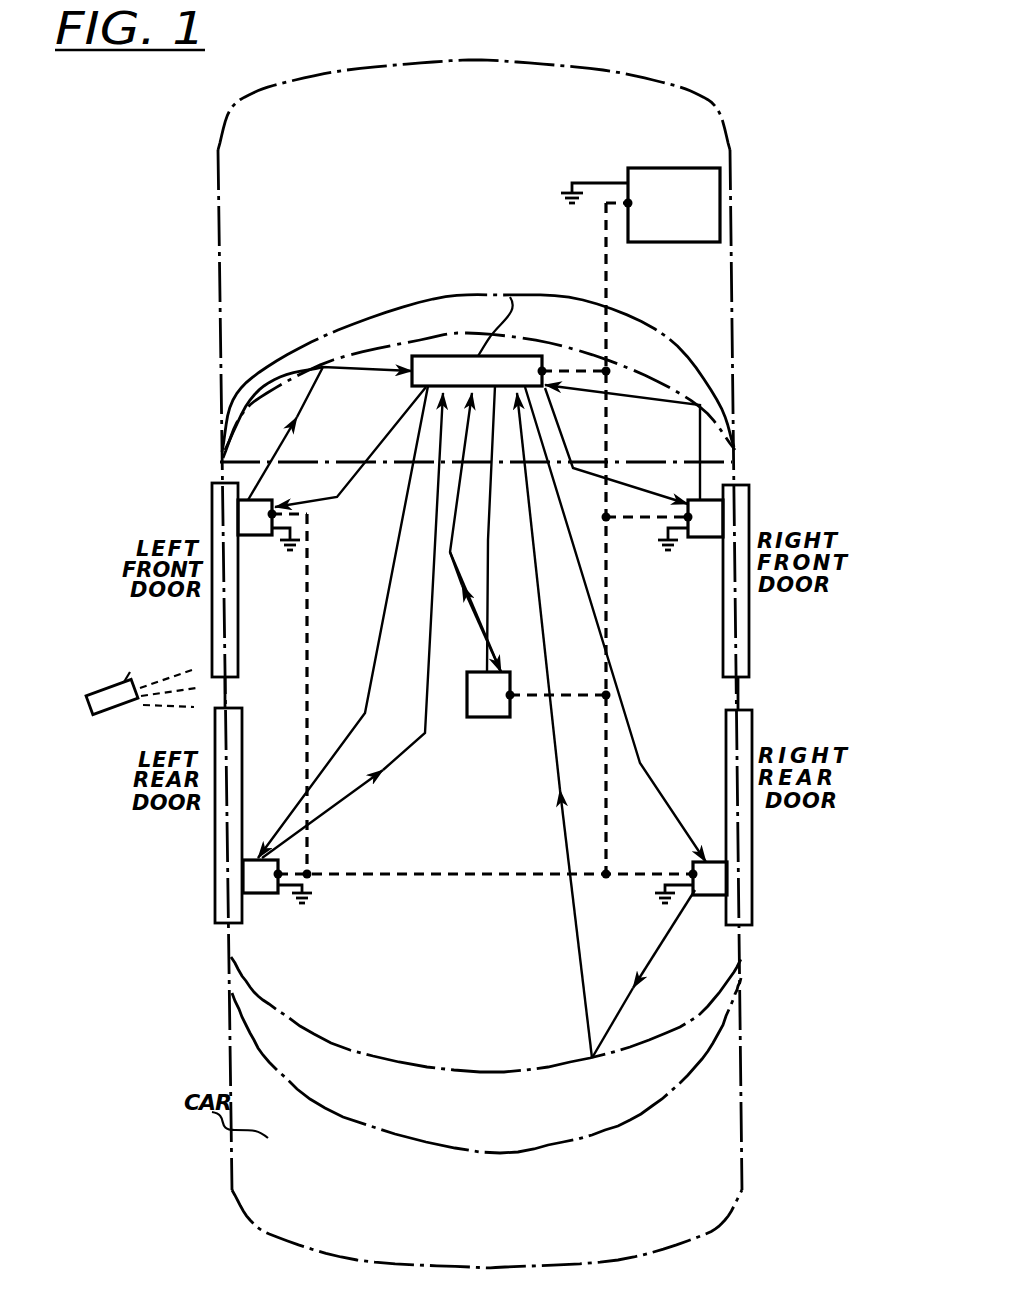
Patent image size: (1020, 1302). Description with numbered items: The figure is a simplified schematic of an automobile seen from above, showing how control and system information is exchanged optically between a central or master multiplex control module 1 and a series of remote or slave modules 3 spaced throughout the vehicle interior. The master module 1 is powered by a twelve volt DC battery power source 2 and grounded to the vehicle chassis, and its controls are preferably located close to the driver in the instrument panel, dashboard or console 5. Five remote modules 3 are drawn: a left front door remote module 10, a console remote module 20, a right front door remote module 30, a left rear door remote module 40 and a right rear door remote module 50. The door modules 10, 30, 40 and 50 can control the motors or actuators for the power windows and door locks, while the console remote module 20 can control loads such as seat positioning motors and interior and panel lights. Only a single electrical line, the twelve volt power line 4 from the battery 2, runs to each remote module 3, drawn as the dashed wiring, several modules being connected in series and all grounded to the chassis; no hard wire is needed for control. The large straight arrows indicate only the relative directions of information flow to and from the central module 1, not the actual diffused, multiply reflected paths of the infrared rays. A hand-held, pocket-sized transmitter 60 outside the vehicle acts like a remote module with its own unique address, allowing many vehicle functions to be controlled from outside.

The central multiplex control module 1 is at (487, 308).
The DC battery power source 2 is at (690, 243).
The remote modules 3 is at (255, 535).
The power line 4 is at (606, 297).
The console 5 is at (680, 437).
The left front door remote module 10 is at (266, 528).
The console remote module 20 is at (502, 707).
The right front door remote module 30 is at (717, 530).
The left rear door remote module 40 is at (271, 888).
The right rear door remote module 50 is at (721, 890).
The hand-held transmitter 60 is at (130, 689).